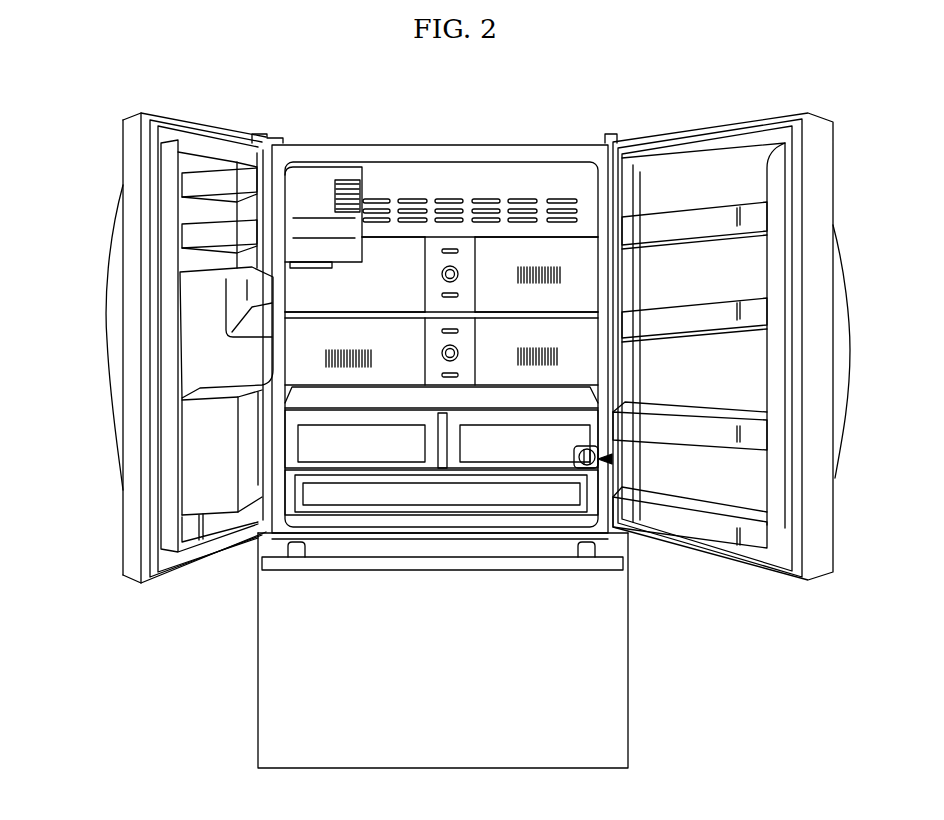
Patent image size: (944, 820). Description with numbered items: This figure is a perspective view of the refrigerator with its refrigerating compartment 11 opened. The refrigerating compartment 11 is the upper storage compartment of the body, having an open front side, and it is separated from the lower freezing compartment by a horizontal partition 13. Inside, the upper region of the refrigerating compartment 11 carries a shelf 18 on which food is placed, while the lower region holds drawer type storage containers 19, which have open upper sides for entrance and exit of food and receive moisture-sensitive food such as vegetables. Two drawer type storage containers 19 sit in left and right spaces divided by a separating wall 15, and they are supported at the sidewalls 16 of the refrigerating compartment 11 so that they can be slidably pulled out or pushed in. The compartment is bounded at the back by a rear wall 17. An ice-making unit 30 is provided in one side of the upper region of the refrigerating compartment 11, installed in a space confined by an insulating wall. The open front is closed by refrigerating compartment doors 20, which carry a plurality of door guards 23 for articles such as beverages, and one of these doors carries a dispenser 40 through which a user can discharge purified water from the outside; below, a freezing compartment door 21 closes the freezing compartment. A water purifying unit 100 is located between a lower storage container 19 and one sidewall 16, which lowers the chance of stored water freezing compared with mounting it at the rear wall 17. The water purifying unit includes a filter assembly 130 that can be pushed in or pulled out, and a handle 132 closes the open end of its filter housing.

The refrigerating compartment 11 is at (388, 259).
The horizontal partition 13 is at (280, 539).
The separating wall 15 is at (445, 457).
The sidewall 16 is at (592, 193).
The rear wall 17 is at (503, 253).
The shelf 18 is at (380, 312).
The drawer type storage container 19 is at (392, 435).
The refrigerating compartment door 20 is at (128, 163).
The freezing compartment door 21 is at (272, 657).
The door guard 23 is at (707, 225).
The ice-making unit 30 is at (323, 178).
The dispenser 40 is at (207, 373).
The water purifying unit 100 is at (572, 440).
The filter assembly 130 is at (611, 460).
The handle 132 is at (596, 452).